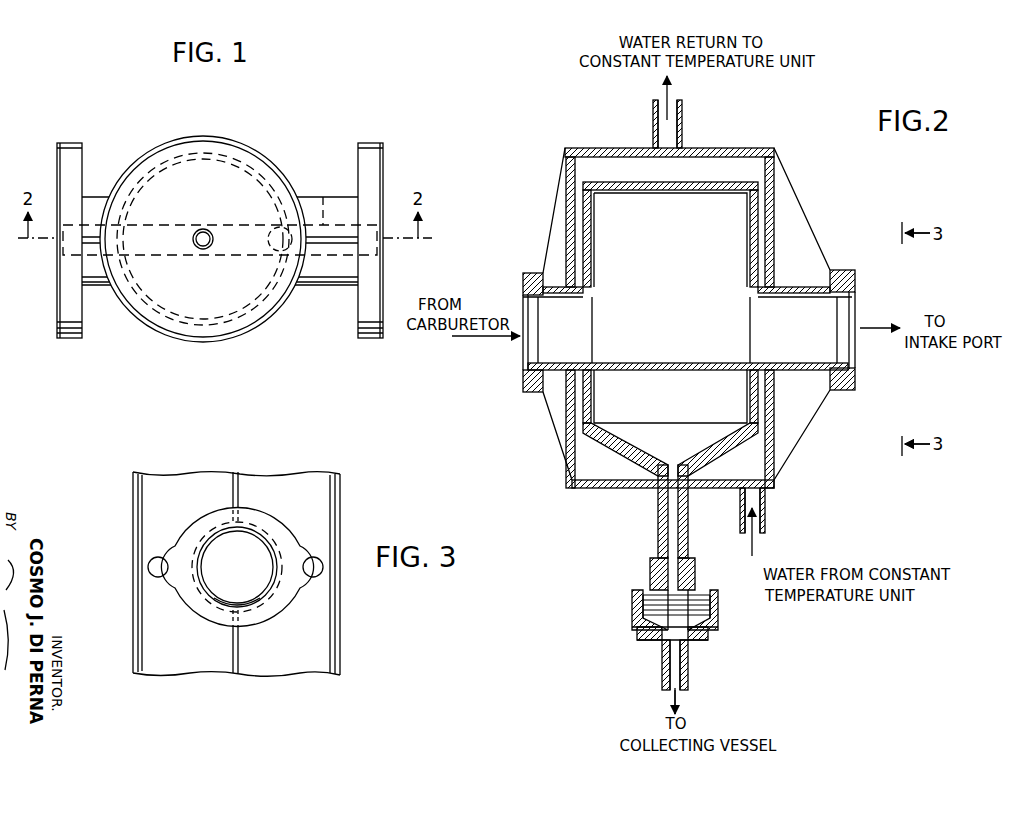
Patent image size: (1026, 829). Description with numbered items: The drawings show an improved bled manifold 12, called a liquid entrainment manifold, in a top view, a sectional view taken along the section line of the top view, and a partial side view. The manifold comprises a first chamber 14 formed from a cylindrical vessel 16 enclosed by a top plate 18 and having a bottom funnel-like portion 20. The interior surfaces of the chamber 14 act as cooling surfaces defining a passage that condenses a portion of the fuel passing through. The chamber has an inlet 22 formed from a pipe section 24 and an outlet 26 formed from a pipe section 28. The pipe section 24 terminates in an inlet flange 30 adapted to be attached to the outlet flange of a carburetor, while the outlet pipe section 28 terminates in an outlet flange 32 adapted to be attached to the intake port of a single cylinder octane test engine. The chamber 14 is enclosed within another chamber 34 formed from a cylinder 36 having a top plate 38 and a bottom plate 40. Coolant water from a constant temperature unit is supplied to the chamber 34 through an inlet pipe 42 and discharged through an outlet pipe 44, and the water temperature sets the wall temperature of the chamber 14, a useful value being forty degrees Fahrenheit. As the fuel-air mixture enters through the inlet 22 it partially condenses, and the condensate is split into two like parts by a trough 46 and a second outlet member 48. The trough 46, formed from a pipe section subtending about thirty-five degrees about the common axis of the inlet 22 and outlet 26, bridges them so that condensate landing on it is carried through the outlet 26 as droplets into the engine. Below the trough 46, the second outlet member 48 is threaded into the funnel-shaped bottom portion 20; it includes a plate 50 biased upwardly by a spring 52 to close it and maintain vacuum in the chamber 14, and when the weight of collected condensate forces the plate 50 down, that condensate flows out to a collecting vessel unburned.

In FIG. 1, the bled manifold 12 is at (208, 336).
In FIG. 2, the bled manifold 12 is at (553, 470).
In FIG. 2, the first chamber 14 is at (682, 286).
In FIG. 1, the cylindrical vessel 16 is at (264, 175).
In FIG. 2, the cylindrical vessel 16 is at (749, 240).
In FIG. 2, the top plate 18 is at (706, 191).
In FIG. 2, the bottom funnel-like portion 20 is at (630, 455).
In FIG. 2, the inlet 22 is at (572, 349).
In FIG. 1, the pipe section 24 is at (104, 197).
In FIG. 2, the pipe section 24 is at (592, 300).
In FIG. 2, the outlet 26 is at (802, 349).
In FIG. 1, the pipe section 28 is at (303, 197).
In FIG. 2, the pipe section 28 is at (762, 300).
In FIG. 1, the inlet flange 30 is at (83, 162).
In FIG. 2, the inlet flange 30 is at (523, 393).
In FIG. 1, the outlet flange 32 is at (384, 178).
In FIG. 2, the outlet flange 32 is at (856, 279).
In FIG. 3, the outlet flange 32 is at (216, 510).
In FIG. 2, the chamber 34 is at (658, 174).
In FIG. 1, the cylinder 36 is at (206, 138).
In FIG. 2, the cylinder 36 is at (776, 188).
In FIG. 3, the cylinder 36 is at (340, 500).
In FIG. 1, the top plate 38 is at (275, 298).
In FIG. 2, the top plate 38 is at (729, 147).
In FIG. 2, the bottom plate 40 is at (604, 489).
In FIG. 1, the inlet pipe 42 is at (267, 240).
In FIG. 2, the inlet pipe 42 is at (766, 516).
In FIG. 1, the outlet pipe 44 is at (206, 250).
In FIG. 2, the outlet pipe 44 is at (653, 125).
In FIG. 1, the trough 46 is at (323, 197).
In FIG. 2, the trough 46 is at (683, 363).
In FIG. 3, the trough 46 is at (238, 600).
In FIG. 2, the second outlet member 48 is at (688, 533).
In FIG. 2, the plate 50 is at (655, 598).
In FIG. 2, the spring 52 is at (652, 635).